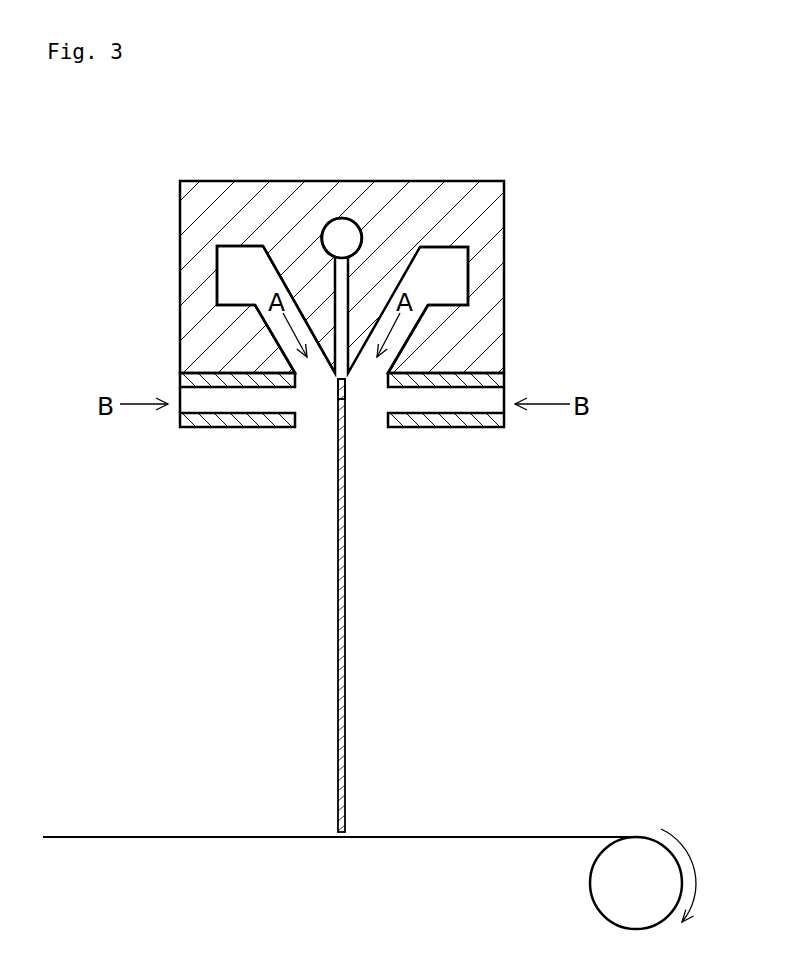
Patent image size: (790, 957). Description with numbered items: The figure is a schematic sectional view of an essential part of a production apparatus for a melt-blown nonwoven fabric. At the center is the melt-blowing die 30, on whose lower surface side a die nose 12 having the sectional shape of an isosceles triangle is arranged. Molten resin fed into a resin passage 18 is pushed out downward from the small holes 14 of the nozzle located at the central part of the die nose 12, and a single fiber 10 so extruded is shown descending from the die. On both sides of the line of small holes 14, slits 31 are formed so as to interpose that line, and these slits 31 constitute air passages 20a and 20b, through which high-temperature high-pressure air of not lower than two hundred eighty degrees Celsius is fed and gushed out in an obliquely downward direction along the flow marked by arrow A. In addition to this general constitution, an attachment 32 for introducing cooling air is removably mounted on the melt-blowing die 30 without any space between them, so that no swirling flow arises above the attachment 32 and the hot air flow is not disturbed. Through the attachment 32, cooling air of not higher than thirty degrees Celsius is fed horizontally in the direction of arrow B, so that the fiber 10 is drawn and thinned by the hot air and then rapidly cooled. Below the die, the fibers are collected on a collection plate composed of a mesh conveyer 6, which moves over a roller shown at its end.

The mesh conveyer 6 is at (98, 836).
The fiber 10 is at (338, 508).
The die nose 12 is at (285, 278).
The small holes 14 is at (346, 382).
The resin passage 18 is at (351, 231).
The air passage 20a is at (230, 276).
The air passage 20b is at (455, 276).
The melt-blowing die 30 is at (456, 190).
The slits 31 is at (263, 333).
The attachment 32 is at (508, 378).